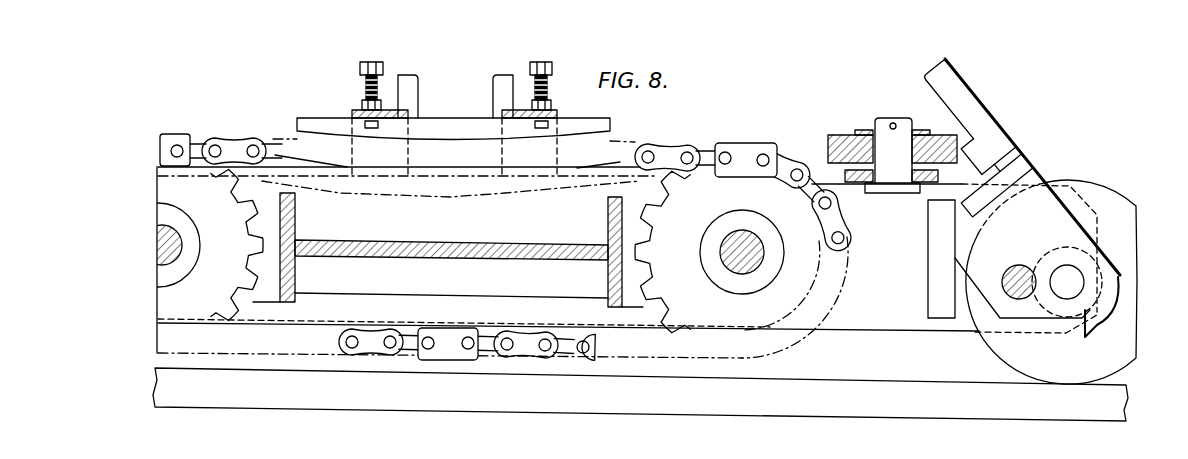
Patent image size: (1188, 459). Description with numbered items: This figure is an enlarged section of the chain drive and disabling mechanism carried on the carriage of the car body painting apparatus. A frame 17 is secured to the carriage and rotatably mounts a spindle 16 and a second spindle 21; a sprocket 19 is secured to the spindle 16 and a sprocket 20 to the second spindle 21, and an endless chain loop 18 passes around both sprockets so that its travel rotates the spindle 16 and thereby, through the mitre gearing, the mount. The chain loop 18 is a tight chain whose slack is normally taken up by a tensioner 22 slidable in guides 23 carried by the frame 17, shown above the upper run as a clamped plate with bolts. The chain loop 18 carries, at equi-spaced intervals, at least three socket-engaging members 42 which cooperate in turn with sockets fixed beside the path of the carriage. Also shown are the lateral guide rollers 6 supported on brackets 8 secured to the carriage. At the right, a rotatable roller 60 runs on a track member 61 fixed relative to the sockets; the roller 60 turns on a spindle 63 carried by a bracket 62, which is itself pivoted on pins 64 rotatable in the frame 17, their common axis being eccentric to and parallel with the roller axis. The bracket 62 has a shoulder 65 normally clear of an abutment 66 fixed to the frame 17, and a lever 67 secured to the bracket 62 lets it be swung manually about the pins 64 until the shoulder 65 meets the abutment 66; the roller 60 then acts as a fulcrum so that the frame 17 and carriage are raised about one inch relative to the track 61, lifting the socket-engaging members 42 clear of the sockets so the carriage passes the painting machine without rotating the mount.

The rollers 6 is at (842, 140).
The brackets 8 is at (847, 178).
The spindle 16 is at (747, 268).
The frame 17 is at (857, 322).
The endless chain loop 18 is at (238, 143).
The sprocket 19 is at (697, 210).
The sprocket 20 is at (200, 198).
The second spindle 21 is at (175, 257).
The tensioner 22 is at (580, 127).
The guides 23 is at (483, 118).
The socket-engaging members 42 is at (168, 138).
The roller 60 is at (1097, 200).
The track member 61 is at (918, 395).
The bracket 62 is at (1037, 178).
The spindle 63 is at (1070, 278).
The pins 64 is at (1017, 267).
The shoulder 65 is at (1093, 335).
The abutment 66 is at (927, 302).
The lever 67 is at (965, 115).